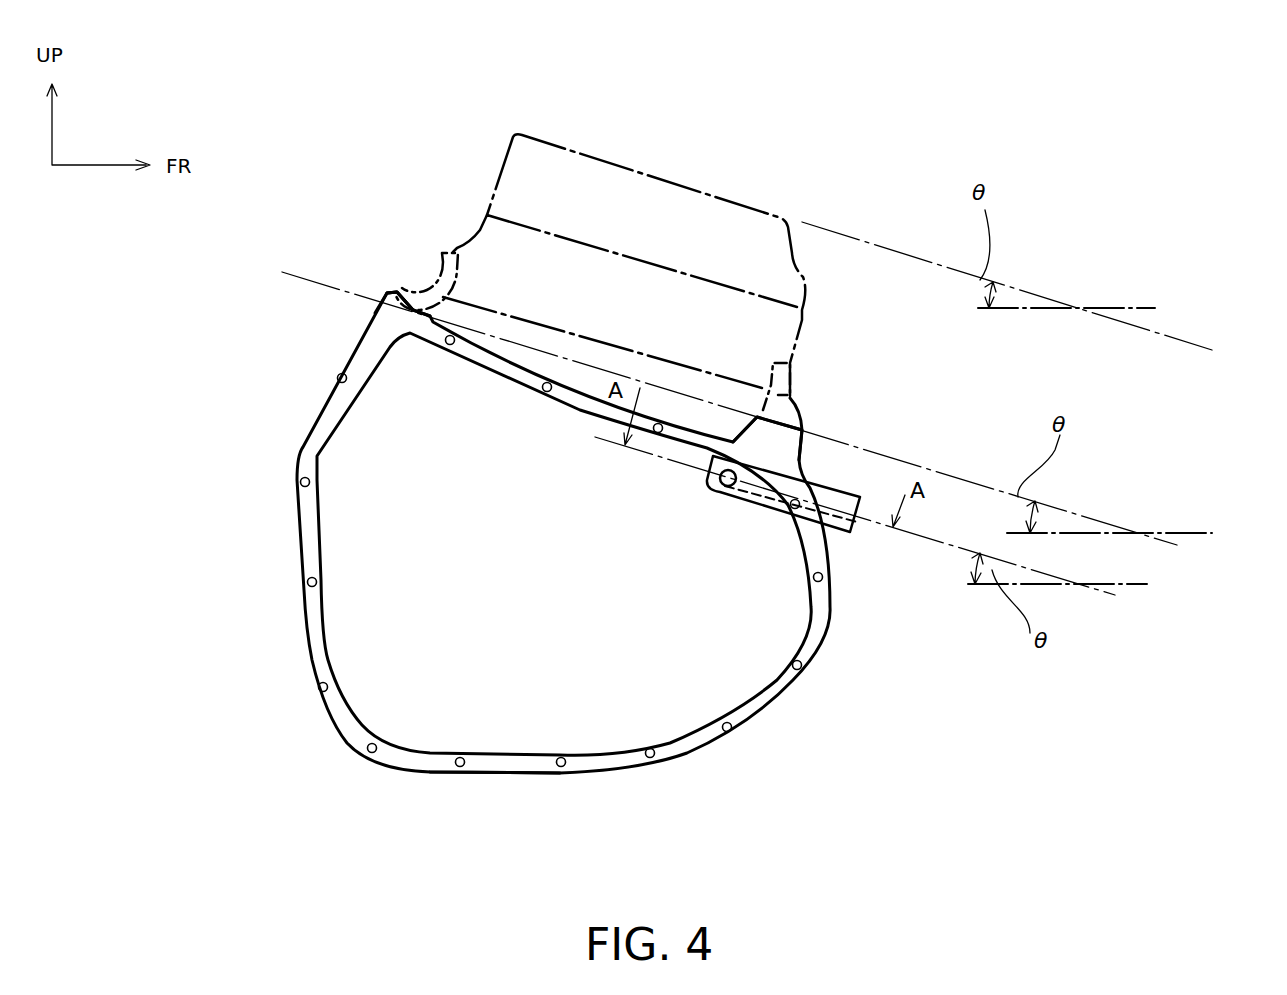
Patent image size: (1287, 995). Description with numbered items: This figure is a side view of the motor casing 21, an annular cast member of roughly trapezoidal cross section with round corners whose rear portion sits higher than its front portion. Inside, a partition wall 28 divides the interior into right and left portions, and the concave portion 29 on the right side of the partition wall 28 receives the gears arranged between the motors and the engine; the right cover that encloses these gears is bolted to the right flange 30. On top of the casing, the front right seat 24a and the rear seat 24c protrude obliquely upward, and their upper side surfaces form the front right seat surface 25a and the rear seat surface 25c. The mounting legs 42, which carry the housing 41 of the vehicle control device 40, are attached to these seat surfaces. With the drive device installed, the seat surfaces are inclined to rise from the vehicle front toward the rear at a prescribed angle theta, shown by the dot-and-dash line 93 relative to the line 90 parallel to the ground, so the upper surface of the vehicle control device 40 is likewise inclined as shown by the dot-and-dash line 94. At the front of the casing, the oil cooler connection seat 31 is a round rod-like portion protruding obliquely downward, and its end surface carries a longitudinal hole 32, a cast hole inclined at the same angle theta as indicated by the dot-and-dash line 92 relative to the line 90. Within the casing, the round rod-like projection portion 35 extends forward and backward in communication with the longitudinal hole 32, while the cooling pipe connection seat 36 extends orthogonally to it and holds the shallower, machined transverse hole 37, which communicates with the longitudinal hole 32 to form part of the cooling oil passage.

The motor casing 21 is at (765, 712).
The front right seat 24a is at (793, 450).
The rear seat 24c is at (380, 313).
The front right seat surface 25a is at (802, 430).
The rear seat surface 25c is at (388, 291).
The partition wall 28 is at (552, 670).
The concave portion 29 is at (675, 750).
The right flange 30 is at (733, 733).
The oil cooler connection seat 31 is at (847, 533).
The longitudinal hole 32 is at (863, 520).
The projection portion 35 is at (773, 512).
The cooling pipe connection seat 36 is at (733, 500).
The transverse hole 37 is at (717, 493).
The vehicle control device 40 is at (505, 152).
The housing 41 is at (490, 195).
The mounting legs 42 is at (425, 276).
The line parallel to the ground 90 is at (1135, 307).
The dot-and-dash line 92 is at (1050, 583).
The dot-and-dash line 93 is at (1083, 512).
The dot-and-dash line 94 is at (1043, 298).